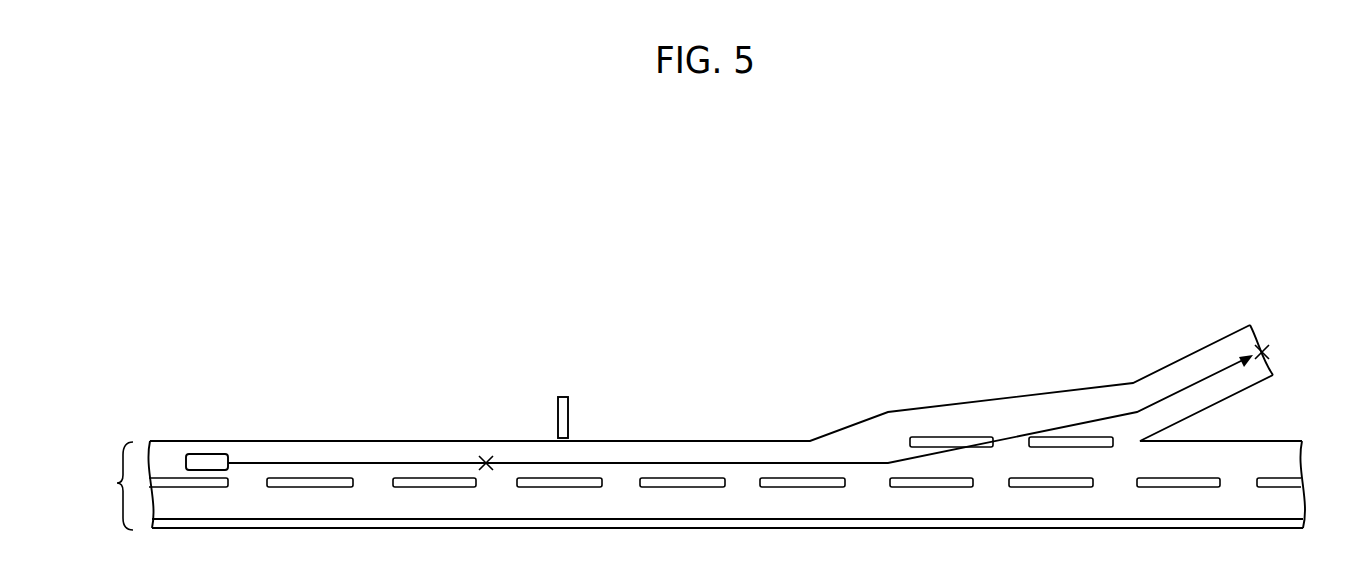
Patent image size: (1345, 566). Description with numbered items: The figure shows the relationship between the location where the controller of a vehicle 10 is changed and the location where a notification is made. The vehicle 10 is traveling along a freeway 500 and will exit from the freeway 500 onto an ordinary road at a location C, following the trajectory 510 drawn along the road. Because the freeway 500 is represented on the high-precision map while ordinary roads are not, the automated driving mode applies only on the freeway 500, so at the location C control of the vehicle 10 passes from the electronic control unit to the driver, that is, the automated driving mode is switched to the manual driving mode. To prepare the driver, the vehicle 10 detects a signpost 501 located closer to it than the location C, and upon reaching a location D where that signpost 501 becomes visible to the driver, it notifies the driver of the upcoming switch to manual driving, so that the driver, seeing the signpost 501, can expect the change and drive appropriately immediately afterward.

The freeway 500 is at (683, 427).
The trajectory 510 is at (698, 462).
The vehicle 10 is at (210, 454).
The signpost 501 is at (562, 397).
The location where the signpost becomes visible D is at (485, 461).
The location where the controller is changed C is at (1268, 350).